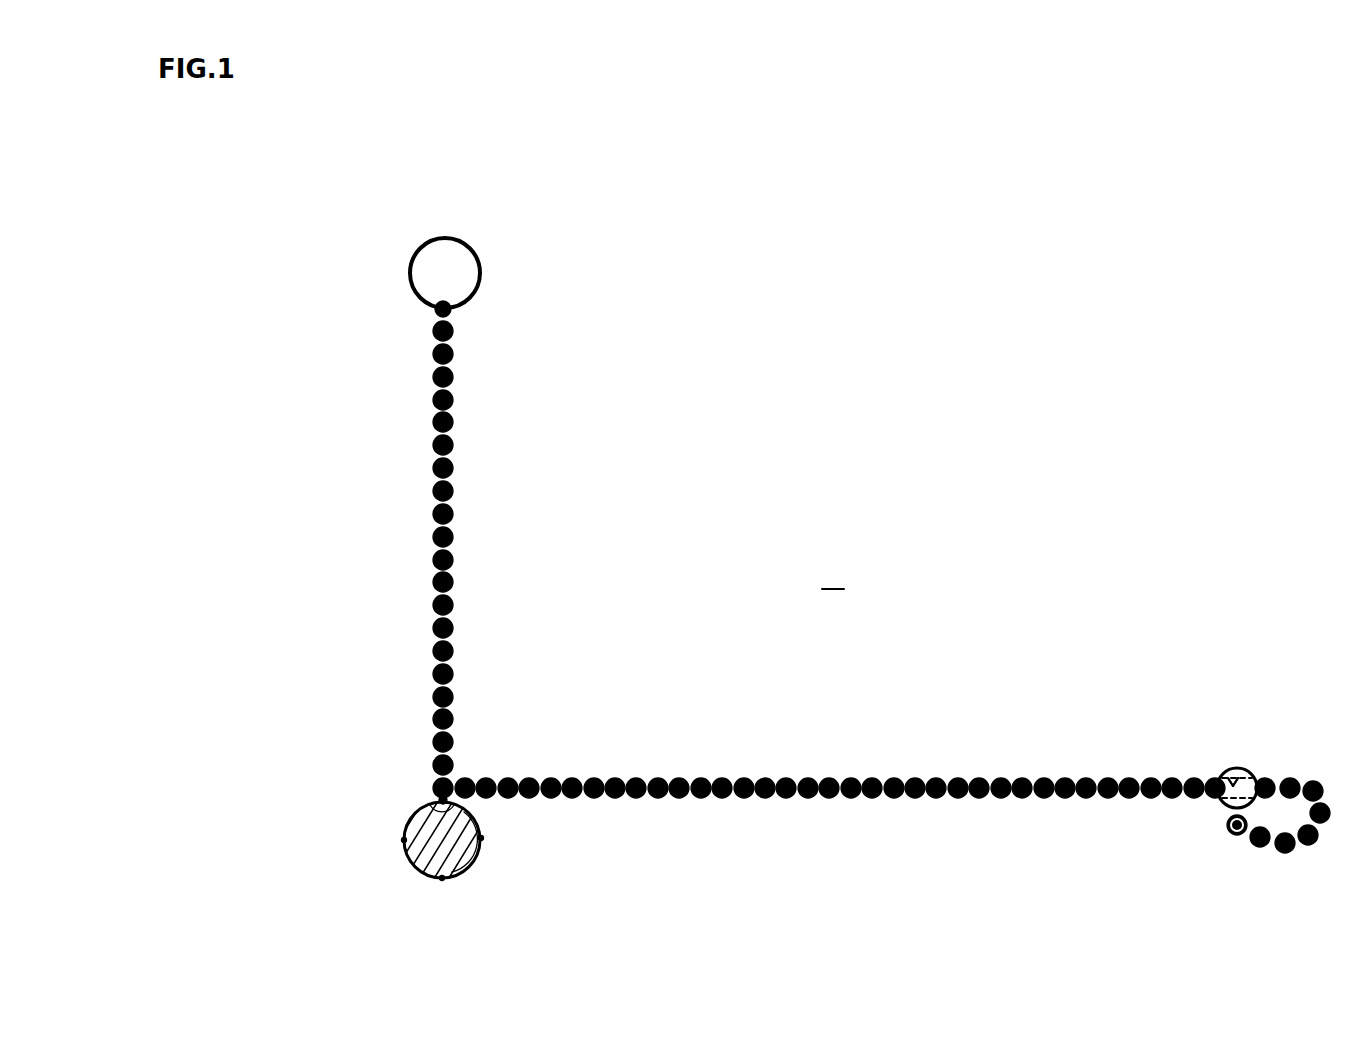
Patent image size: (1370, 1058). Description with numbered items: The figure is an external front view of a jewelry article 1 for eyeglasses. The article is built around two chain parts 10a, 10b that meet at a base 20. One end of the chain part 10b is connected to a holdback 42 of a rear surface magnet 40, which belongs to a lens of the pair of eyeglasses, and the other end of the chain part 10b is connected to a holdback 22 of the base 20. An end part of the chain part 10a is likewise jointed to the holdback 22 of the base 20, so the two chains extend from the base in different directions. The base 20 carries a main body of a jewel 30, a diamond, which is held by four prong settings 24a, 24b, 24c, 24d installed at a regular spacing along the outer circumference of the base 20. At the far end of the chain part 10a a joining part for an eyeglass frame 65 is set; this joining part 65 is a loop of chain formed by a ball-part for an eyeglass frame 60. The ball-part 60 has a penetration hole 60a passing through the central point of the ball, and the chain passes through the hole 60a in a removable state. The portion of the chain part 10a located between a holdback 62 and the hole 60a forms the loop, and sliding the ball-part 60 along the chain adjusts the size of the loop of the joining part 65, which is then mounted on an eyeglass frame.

The jewelry article 1 is at (833, 576).
The chain part 10a is at (772, 778).
The chain part 10b is at (454, 561).
The base 20 is at (418, 870).
The holdback 22 is at (436, 791).
The prong setting 24a is at (456, 806).
The prong setting 24b is at (484, 838).
The prong setting 24c is at (442, 878).
The prong setting 24d is at (404, 840).
The main body of a jewel 30 is at (482, 850).
The rear surface magnet 40 is at (414, 265).
The holdback 42 is at (432, 312).
The ball-part for an eyeglass frame 60 is at (1238, 768).
The penetration hole 60a is at (1230, 782).
The holdback 62 is at (1228, 826).
The joining part for an eyeglass frame 65 is at (1306, 752).